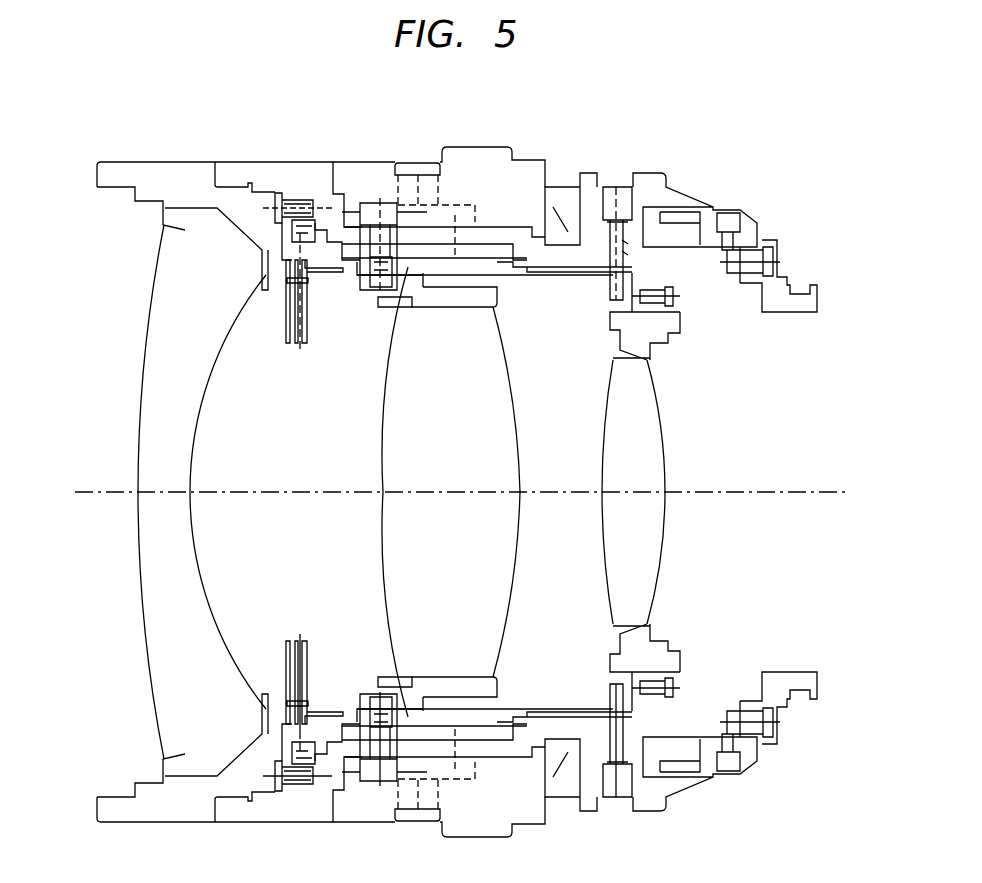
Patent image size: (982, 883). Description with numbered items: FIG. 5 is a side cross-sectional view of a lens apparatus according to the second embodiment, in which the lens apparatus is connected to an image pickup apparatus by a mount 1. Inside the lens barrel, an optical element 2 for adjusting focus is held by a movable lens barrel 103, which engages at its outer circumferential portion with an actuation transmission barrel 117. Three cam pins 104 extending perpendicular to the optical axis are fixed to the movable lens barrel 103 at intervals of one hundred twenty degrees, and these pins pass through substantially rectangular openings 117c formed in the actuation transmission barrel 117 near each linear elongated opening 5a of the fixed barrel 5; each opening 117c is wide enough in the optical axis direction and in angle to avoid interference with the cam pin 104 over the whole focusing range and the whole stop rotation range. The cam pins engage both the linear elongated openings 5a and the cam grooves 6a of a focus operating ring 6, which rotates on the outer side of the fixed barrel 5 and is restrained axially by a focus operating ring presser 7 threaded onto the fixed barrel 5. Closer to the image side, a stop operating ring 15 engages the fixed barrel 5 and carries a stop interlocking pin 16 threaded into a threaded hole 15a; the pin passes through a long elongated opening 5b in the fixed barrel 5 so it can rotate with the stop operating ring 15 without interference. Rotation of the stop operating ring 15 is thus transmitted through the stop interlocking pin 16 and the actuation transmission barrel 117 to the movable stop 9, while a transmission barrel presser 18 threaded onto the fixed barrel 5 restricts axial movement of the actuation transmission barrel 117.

The mount 1 is at (780, 287).
The optical element 2 is at (385, 553).
The fixed barrel 5 is at (232, 160).
The linear elongated opening 5a is at (438, 187).
The long elongated opening 5b is at (625, 253).
The focus operating ring 6 is at (493, 217).
The cam groove 6a is at (432, 232).
The focus operating ring presser 7 is at (562, 220).
The movable stop 9 is at (298, 341).
The stop operating ring 15 is at (672, 195).
The threaded hole 15a is at (625, 242).
The stop interlocking pin 16 is at (612, 300).
The transmission barrel presser 18 is at (283, 160).
The movable lens barrel 103 is at (448, 295).
The cam pin 104 is at (380, 205).
The actuation transmission barrel 117 is at (540, 273).
The opening 117c is at (400, 297).